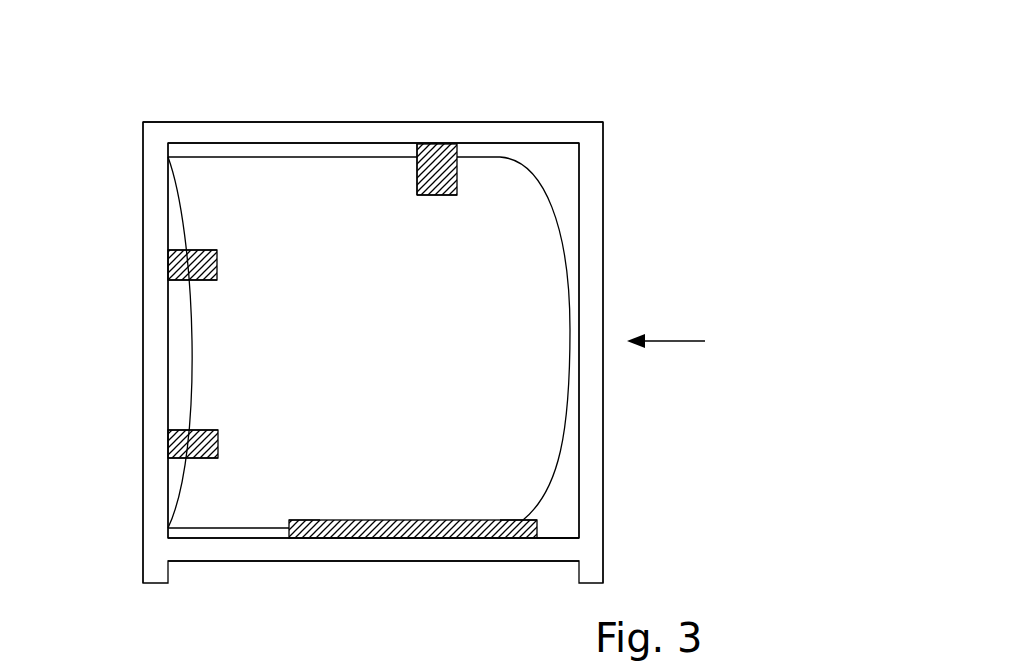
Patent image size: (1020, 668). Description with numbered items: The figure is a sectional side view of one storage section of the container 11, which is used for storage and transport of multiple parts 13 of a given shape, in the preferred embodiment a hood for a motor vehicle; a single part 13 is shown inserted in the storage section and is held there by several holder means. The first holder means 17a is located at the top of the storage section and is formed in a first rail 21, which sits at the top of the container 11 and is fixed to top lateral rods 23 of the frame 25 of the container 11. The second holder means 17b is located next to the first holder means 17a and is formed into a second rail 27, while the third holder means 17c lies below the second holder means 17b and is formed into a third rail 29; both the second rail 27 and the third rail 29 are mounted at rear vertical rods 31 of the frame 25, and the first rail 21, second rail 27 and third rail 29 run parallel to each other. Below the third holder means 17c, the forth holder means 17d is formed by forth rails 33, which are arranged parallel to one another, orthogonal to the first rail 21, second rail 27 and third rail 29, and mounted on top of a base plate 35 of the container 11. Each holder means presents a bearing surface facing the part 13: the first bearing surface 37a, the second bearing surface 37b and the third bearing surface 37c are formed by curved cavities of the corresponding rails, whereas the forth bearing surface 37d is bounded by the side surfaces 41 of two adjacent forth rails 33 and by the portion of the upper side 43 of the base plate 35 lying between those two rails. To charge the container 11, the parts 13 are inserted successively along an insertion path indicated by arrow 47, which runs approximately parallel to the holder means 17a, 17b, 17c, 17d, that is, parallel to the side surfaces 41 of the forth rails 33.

The container 11 is at (104, 92).
The part 13 is at (392, 337).
The first holder means 17a is at (417, 190).
The second holder means 17b is at (210, 282).
The third holder means 17c is at (208, 460).
The forth holder means 17d is at (313, 520).
The first rail 21 is at (436, 144).
The top lateral rods 23 is at (347, 131).
The frame 25 is at (618, 198).
The second rail 27 is at (168, 263).
The third rail 29 is at (168, 442).
The rear vertical rods 31 is at (157, 231).
The forth rails 33 is at (375, 520).
The base plate 35 is at (273, 553).
The first bearing surface 37a is at (438, 196).
The second bearing surface 37b is at (207, 249).
The third bearing surface 37c is at (203, 430).
The forth bearing surface 37d is at (450, 520).
The side surfaces 41 is at (413, 539).
The upper side 43 is at (229, 530).
The arrow 47 is at (688, 341).